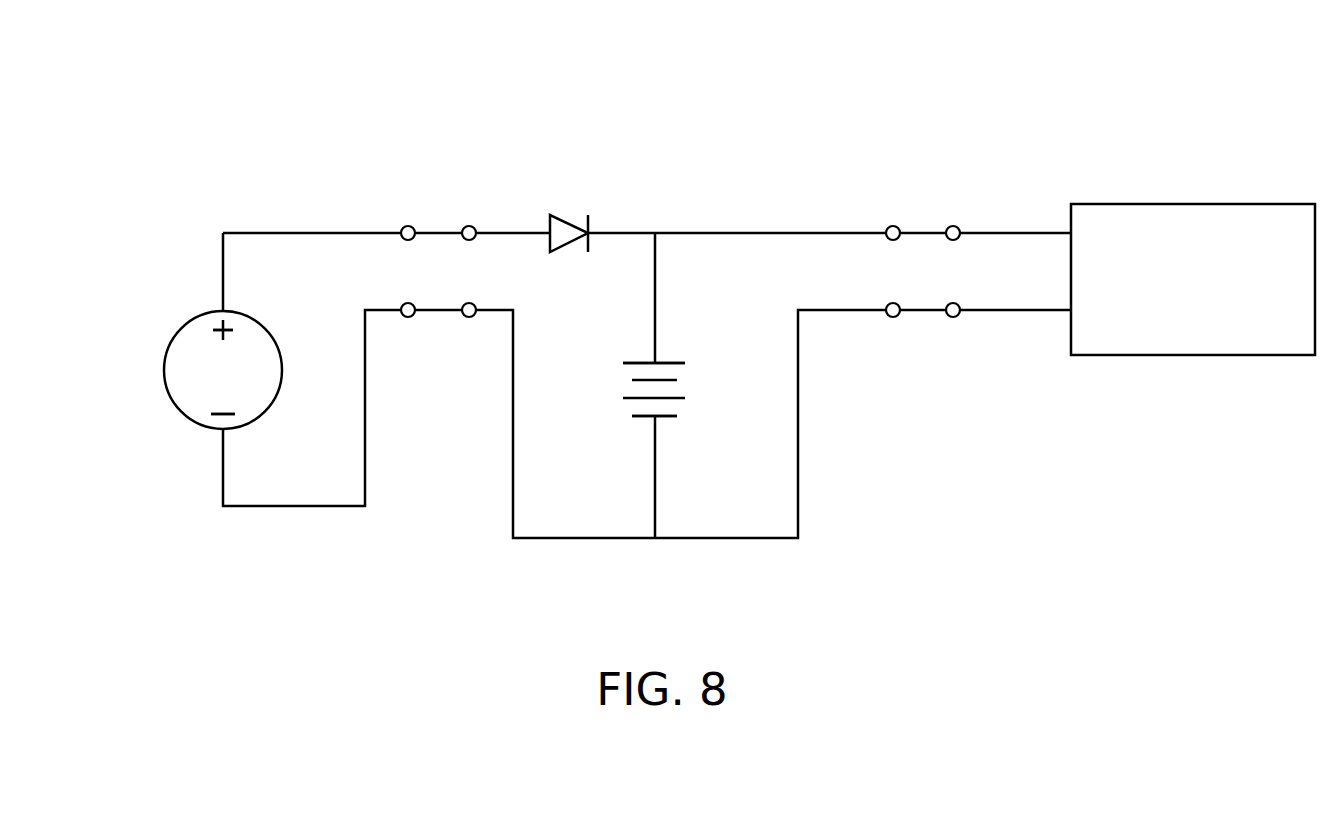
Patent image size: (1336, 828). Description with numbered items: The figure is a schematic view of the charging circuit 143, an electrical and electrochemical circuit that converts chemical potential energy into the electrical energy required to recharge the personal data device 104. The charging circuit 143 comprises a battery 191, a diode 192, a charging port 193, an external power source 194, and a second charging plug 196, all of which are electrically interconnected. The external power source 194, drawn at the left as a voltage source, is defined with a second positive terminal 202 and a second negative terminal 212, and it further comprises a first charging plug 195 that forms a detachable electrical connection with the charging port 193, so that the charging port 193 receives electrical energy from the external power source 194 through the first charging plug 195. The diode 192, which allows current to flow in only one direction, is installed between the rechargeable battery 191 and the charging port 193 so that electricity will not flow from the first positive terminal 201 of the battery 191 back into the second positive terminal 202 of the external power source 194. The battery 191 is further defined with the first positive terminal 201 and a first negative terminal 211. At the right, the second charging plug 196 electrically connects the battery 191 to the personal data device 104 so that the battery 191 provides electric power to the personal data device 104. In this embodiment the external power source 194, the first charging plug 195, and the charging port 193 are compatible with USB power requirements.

The charging circuit 143 is at (287, 120).
The second positive terminal 202 is at (180, 328).
The external power source 194 is at (262, 328).
The second negative terminal 212 is at (181, 396).
The first charging plug 195 is at (408, 226).
The charging port 193 is at (469, 226).
The diode 192 is at (575, 215).
The second charging plug 196 is at (893, 226).
The battery 191 is at (687, 405).
The first positive terminal 201 is at (652, 345).
The first negative terminal 211 is at (652, 427).
The personal data device 104 is at (1193, 204).